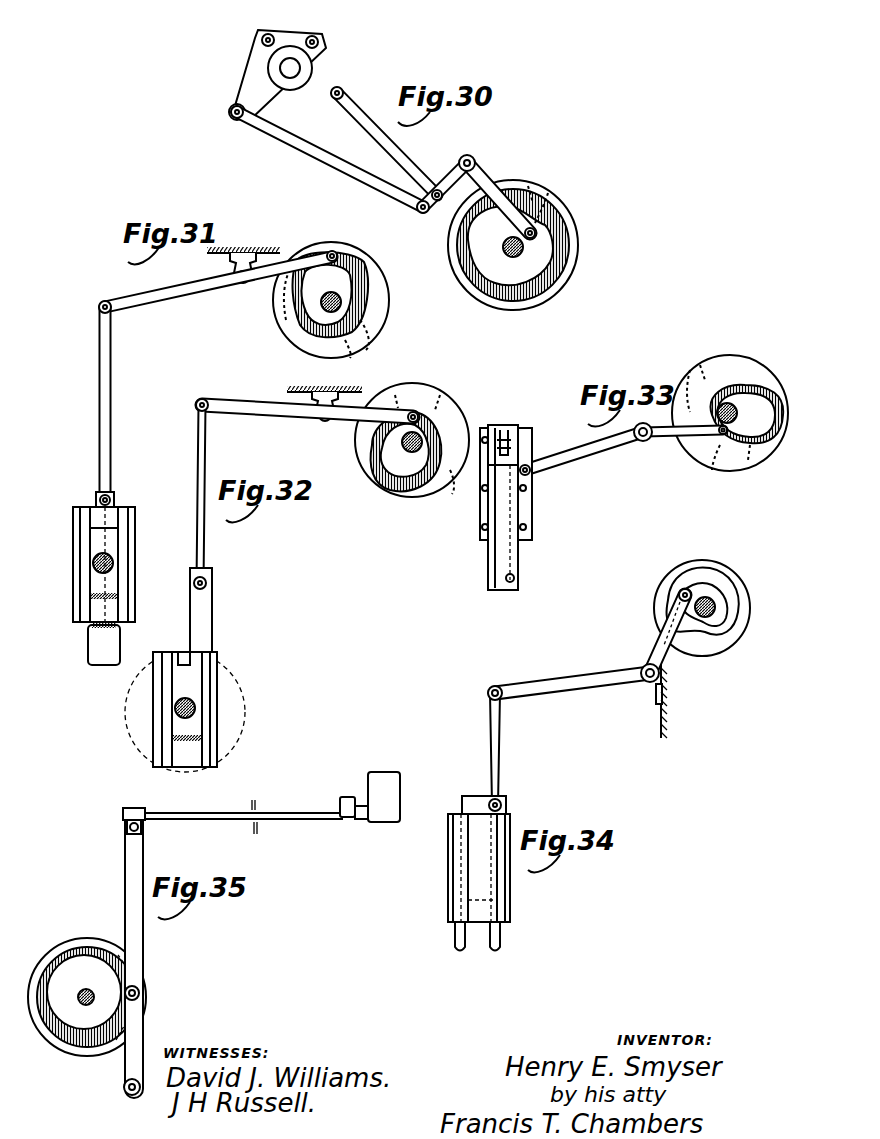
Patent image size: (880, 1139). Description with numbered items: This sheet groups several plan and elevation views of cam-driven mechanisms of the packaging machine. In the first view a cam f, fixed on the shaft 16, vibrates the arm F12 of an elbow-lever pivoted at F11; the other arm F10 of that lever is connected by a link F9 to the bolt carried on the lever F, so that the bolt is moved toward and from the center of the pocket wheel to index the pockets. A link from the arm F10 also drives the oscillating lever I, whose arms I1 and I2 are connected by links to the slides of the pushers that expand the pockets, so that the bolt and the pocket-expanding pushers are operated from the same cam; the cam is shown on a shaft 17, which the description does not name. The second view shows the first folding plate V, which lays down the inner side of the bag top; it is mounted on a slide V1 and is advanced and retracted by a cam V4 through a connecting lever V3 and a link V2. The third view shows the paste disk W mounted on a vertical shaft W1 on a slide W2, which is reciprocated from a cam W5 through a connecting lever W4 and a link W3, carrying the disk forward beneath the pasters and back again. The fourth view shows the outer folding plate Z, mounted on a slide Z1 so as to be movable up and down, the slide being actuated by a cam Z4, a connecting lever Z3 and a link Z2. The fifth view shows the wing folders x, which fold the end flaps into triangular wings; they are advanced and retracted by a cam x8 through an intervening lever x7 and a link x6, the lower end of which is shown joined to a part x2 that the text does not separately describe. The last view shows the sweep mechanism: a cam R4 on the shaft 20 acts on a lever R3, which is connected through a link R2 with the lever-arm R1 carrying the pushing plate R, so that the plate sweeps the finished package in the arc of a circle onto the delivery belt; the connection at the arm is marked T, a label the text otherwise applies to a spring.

In FIG. 30, the cam f is at (578, 240).
In FIG. 30, the oscillating lever I is at (277, 75).
In FIG. 30, the arm of lever I I1 is at (250, 26).
In FIG. 30, the arm of lever I I2 is at (318, 40).
In FIG. 30, the lever F is at (350, 176).
In FIG. 30, the link F9 is at (398, 152).
In FIG. 30, the arm of elbow-lever F10 is at (444, 186).
In FIG. 30, the pivot of elbow-lever F11 is at (478, 160).
In FIG. 30, the arm of elbow-lever F12 is at (500, 183).
In FIG. 30, the cam shaft 17 is at (536, 229).
In FIG. 33, the cam shaft 17 is at (730, 400).
In FIG. 31, the cam V4 is at (346, 300).
In FIG. 31, the connecting lever V3 is at (198, 290).
In FIG. 31, the shaft 16 is at (325, 308).
In FIG. 32, the shaft 16 is at (405, 448).
In FIG. 34, the shaft 16 is at (705, 597).
In FIG. 31, the link V2 is at (110, 380).
In FIG. 31, the slide V1 is at (116, 498).
In FIG. 31, the folding plate V is at (104, 586).
In FIG. 31, the slide W2 is at (120, 534).
In FIG. 32, the slide W2 is at (214, 612).
In FIG. 31, the vertical shaft W1 is at (114, 561).
In FIG. 32, the vertical shaft W1 is at (196, 700).
In FIG. 32, the cam W5 is at (420, 440).
In FIG. 32, the connecting lever W4 is at (292, 424).
In FIG. 32, the link W3 is at (210, 528).
In FIG. 32, the paste disk W is at (220, 700).
In FIG. 33, the cam Z4 is at (700, 372).
In FIG. 33, the connecting lever Z3 is at (626, 446).
In FIG. 33, the folding plate Z is at (516, 427).
In FIG. 33, the slide Z1 is at (504, 507).
In FIG. 33, the link Z2 is at (528, 540).
In FIG. 34, the cam x8 is at (742, 588).
In FIG. 34, the lever x7 is at (594, 678).
In FIG. 34, the link x6 is at (500, 748).
In FIG. 34, the cross head x2 is at (470, 805).
In FIG. 34, the wing folder x is at (454, 940).
In FIG. 35, the cam R4 is at (86, 994).
In FIG. 35, the shaft 20 is at (82, 1005).
In FIG. 35, the lever R3 is at (145, 845).
In FIG. 35, the link R2 is at (290, 814).
In FIG. 35, the arm R1 is at (348, 797).
In FIG. 35, the pushing plate or sweep R is at (384, 797).
In FIG. 35, the spring T is at (352, 824).